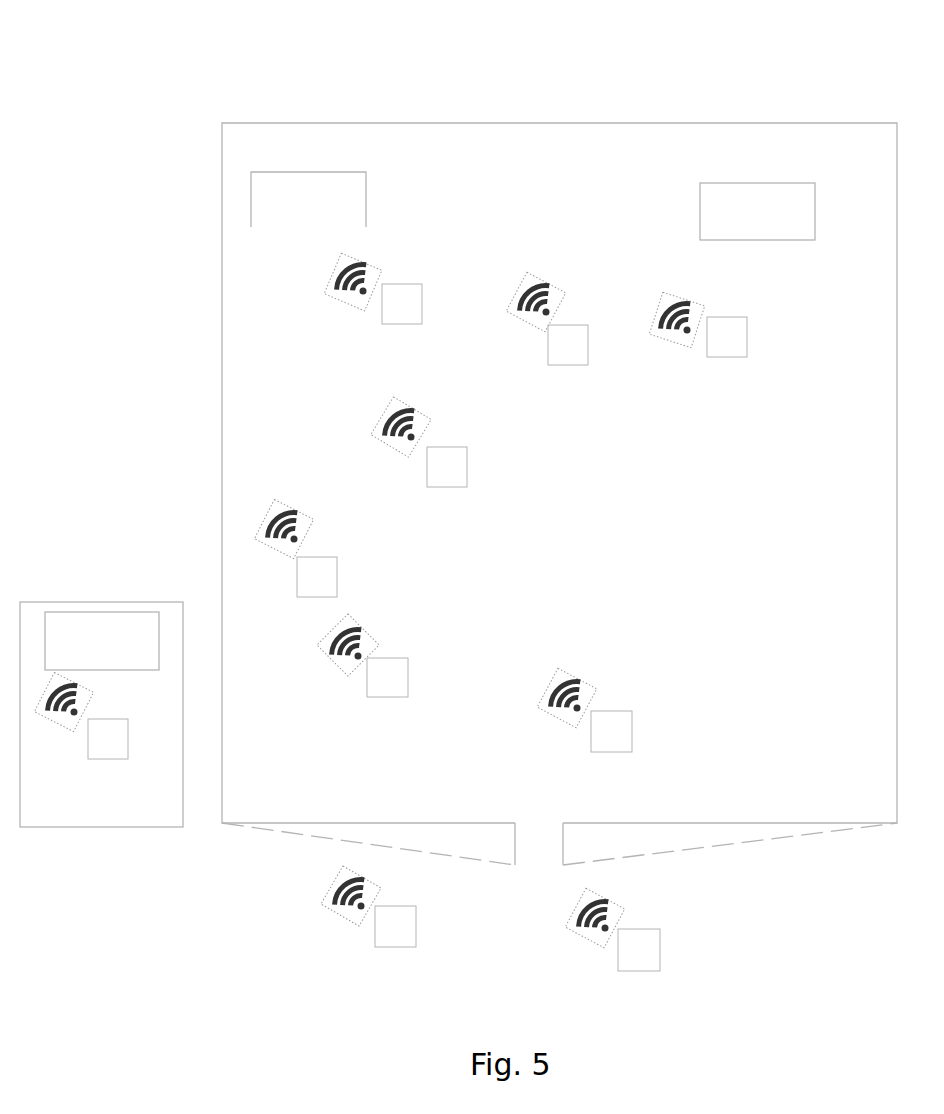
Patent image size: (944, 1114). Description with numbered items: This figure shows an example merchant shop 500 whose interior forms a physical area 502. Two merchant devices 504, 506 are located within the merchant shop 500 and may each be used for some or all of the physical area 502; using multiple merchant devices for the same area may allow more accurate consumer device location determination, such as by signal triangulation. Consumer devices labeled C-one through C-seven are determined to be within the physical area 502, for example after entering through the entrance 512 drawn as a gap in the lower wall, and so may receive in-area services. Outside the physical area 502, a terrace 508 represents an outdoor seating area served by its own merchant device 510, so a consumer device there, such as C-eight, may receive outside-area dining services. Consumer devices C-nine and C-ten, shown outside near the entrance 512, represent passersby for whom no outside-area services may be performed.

The merchant shop 500 is at (869, 36).
The physical area 502 is at (429, 123).
The merchant device 504 is at (366, 212).
The merchant device 506 is at (700, 210).
The terrace 508 is at (87, 602).
The merchant device 510 is at (83, 620).
The entrance 512 is at (552, 823).